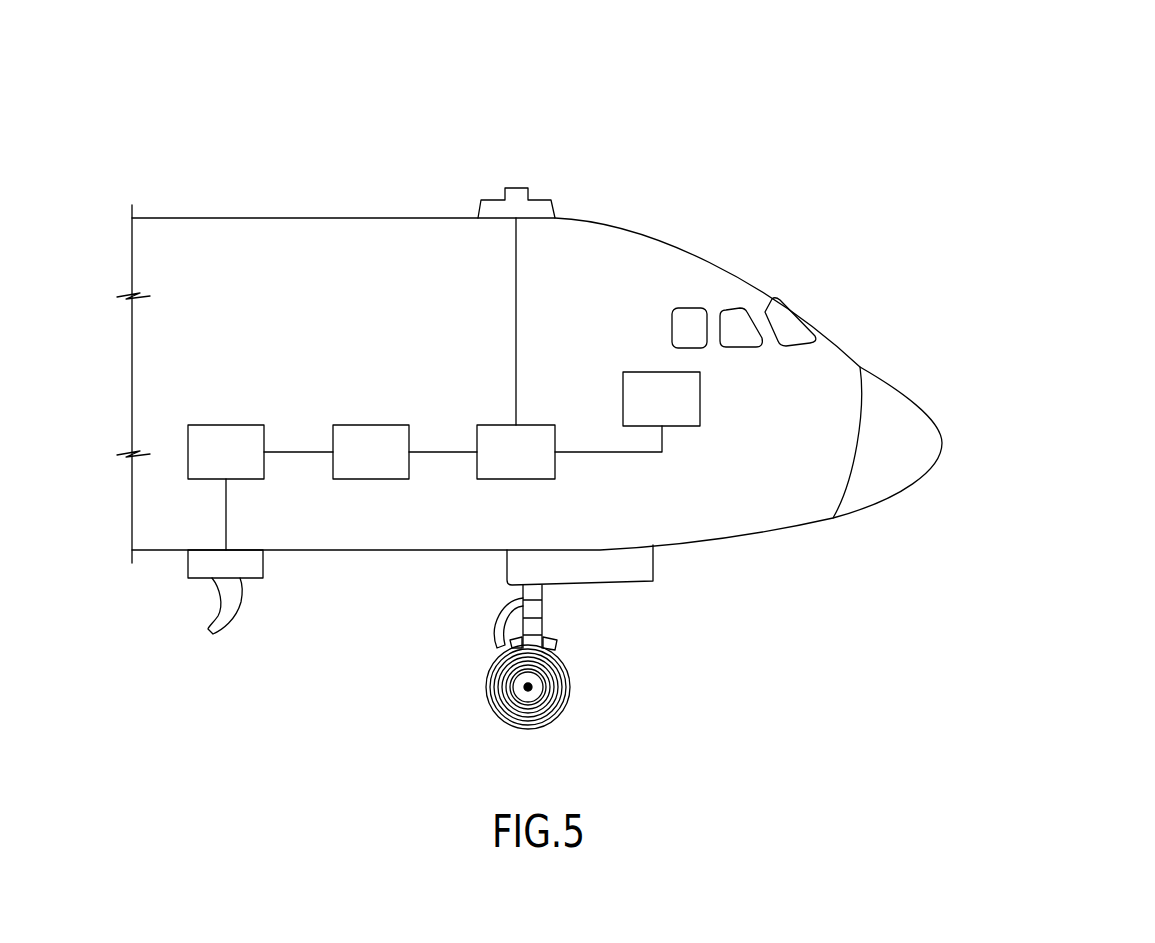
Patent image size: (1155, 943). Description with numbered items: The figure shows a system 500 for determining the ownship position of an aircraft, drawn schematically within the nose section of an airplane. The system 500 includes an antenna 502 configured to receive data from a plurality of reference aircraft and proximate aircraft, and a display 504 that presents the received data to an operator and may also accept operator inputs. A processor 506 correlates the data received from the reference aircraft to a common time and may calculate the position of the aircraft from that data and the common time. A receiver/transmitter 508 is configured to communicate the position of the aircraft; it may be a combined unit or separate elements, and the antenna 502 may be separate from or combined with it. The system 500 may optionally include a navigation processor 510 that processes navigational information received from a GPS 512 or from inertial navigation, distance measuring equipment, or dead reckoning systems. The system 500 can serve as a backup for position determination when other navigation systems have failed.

The system 500 is at (1013, 105).
The antenna 502 is at (220, 608).
The display 504 is at (700, 400).
The processor 506 is at (370, 425).
The receiver/transmitter 508 is at (226, 425).
The navigation processor 510 is at (516, 479).
The GPS 512 is at (516, 188).